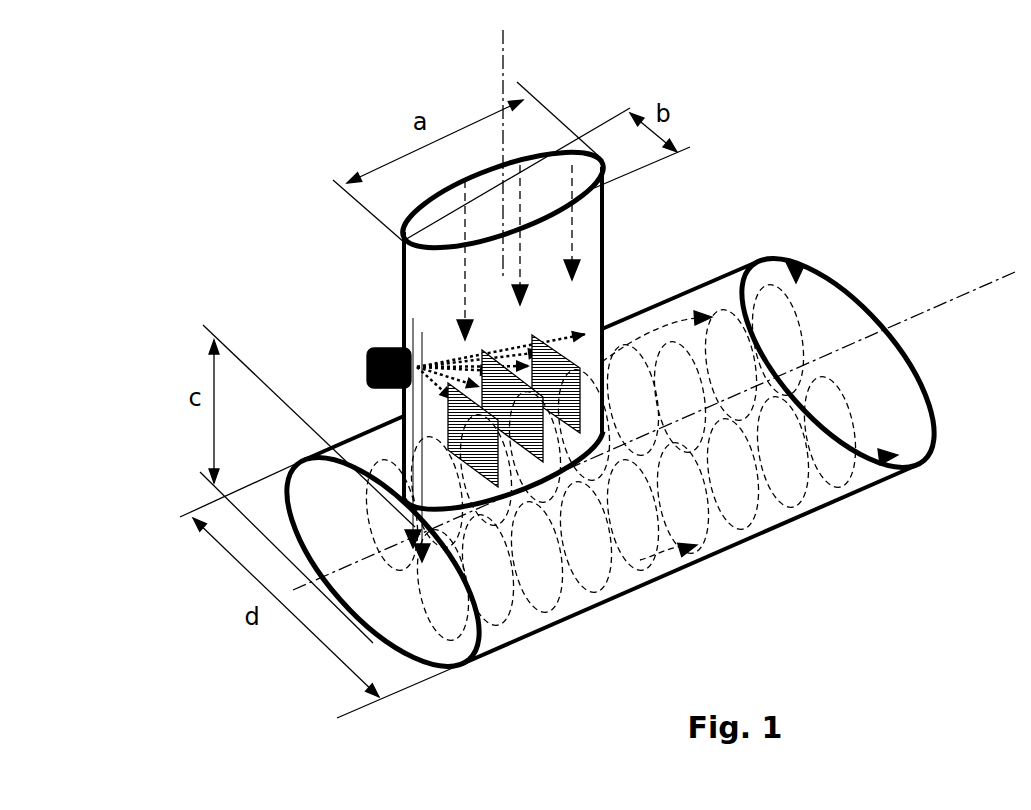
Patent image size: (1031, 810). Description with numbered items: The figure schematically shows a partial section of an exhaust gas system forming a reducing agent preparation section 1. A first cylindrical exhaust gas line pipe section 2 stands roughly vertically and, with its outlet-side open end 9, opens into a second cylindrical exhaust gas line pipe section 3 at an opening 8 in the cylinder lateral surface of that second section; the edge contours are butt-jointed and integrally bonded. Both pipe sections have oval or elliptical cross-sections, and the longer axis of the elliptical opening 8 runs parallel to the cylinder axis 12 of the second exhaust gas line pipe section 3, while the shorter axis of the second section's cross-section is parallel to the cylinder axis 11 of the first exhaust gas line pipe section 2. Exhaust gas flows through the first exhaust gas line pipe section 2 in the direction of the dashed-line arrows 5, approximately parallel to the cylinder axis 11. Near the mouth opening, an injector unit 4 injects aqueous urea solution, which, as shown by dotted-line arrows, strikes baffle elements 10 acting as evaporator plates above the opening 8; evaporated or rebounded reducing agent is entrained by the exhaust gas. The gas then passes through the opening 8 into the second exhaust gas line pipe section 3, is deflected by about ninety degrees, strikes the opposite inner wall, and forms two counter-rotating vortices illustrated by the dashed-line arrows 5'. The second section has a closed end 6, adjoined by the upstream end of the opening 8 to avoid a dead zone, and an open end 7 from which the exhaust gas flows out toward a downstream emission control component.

The reducing agent preparation section 1 is at (214, 181).
The first cylindrical exhaust gas line pipe section 2 is at (603, 262).
The second cylindrical exhaust gas line pipe section 3 is at (752, 542).
The injector unit 4 is at (367, 367).
The dashed-line arrows 5 is at (560, 252).
The dashed-line arrows 5' is at (750, 353).
The closed end 6 is at (436, 652).
The open end 7 is at (903, 393).
The opening 8 is at (555, 450).
The outlet-side open end 9 is at (650, 450).
The baffle elements 10 is at (445, 418).
The cylinder axis 11 is at (506, 53).
The cylinder axis 12 is at (963, 293).